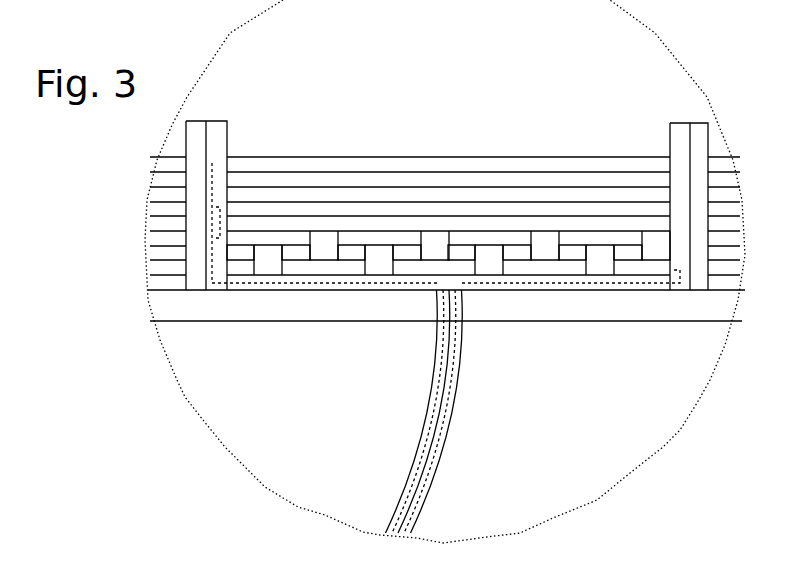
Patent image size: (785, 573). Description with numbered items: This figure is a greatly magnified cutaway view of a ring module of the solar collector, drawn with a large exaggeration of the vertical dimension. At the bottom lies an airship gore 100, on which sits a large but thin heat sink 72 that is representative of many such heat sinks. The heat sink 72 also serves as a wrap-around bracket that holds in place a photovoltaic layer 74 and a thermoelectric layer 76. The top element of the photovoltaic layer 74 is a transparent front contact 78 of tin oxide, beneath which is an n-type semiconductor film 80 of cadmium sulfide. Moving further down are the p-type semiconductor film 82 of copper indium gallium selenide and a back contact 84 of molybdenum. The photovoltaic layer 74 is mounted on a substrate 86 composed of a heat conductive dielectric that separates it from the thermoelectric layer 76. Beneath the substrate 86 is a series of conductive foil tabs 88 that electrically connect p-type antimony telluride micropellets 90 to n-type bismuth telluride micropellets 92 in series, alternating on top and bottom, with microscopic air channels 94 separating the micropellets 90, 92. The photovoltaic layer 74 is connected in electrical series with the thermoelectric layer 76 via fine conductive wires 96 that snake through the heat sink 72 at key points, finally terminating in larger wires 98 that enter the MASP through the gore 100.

The heat sink 72 is at (680, 133).
The photovoltaic layer 74 is at (118, 157).
The thermoelectric layer 76 is at (118, 222).
The transparent front contact 78 is at (418, 163).
The n-type semiconductor film 80 is at (527, 180).
The p-type semiconductor film 82 is at (287, 197).
The back contact 84 is at (563, 207).
The substrate 86 is at (351, 222).
The conductive foil tabs 88 is at (265, 238).
The p-type antimony telluride micropellets 90 is at (362, 248).
The n-type bismuth telluride micropellets 92 is at (518, 262).
The microscopic air channels 94 is at (597, 263).
The fine conductive wires 96 is at (668, 290).
The cable 98 is at (415, 451).
The airship gore 100 is at (173, 305).